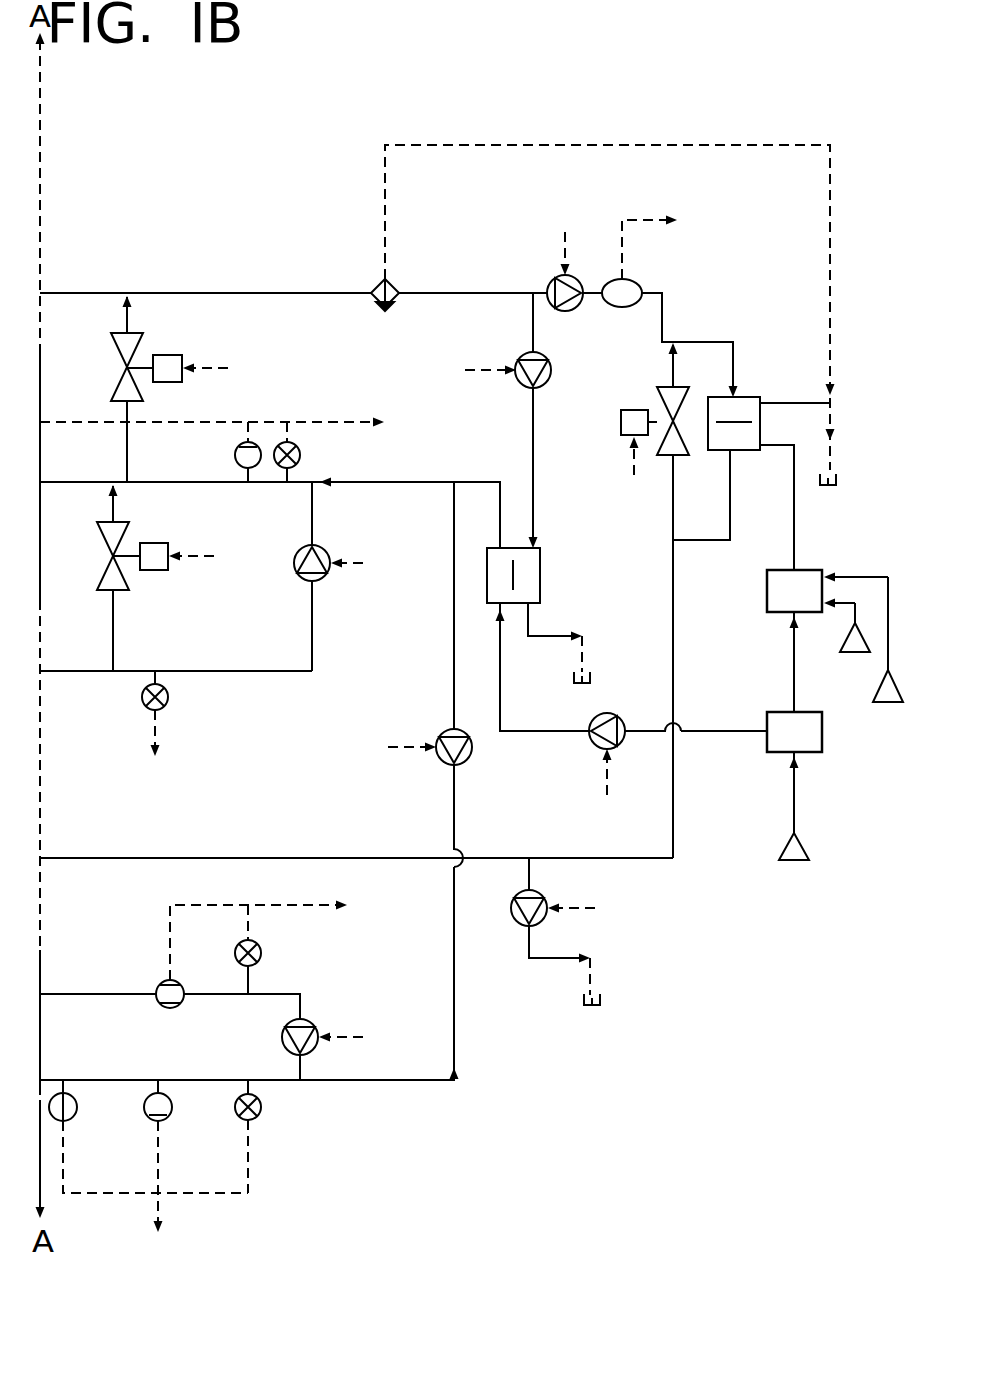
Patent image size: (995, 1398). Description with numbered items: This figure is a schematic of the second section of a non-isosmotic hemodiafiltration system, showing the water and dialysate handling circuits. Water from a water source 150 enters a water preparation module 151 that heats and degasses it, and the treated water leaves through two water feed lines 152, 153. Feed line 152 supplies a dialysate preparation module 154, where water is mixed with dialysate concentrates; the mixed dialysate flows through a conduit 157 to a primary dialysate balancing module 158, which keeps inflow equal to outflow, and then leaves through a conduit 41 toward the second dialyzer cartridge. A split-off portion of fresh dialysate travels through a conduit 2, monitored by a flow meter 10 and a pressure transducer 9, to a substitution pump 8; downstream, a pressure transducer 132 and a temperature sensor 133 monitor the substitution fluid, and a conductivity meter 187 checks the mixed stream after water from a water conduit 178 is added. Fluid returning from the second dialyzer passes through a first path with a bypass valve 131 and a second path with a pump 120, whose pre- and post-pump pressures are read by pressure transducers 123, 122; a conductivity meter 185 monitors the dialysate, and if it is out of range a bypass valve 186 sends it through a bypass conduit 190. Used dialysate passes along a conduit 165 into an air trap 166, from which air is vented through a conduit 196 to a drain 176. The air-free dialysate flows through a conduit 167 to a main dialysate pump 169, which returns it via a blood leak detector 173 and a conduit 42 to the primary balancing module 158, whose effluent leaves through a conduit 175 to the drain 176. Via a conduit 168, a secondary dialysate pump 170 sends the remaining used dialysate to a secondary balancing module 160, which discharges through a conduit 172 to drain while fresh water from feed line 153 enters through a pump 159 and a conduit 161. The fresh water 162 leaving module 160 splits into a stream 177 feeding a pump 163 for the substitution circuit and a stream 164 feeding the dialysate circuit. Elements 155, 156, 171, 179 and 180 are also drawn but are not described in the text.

The conduit 2 is at (107, 993).
The substitution pump 8 is at (318, 1030).
The pressure transducer 9 is at (262, 948).
The flow meter 10 is at (165, 1009).
The conduit 41 is at (675, 598).
The conduit 42 is at (700, 342).
The pump 120 is at (322, 582).
The pressure transducer 122 is at (300, 455).
The pressure transducer 123 is at (143, 703).
The bypass valve 131 is at (110, 560).
The pressure transducer 132 is at (256, 1120).
The temperature sensor 133 is at (70, 1121).
The water source 150 is at (790, 860).
The water preparation module 151 is at (794, 732).
The water feed line 152 is at (793, 650).
The water feed line 153 is at (752, 734).
The dialysate preparation module 154 is at (794, 591).
The filter 155 is at (852, 653).
The filter 156 is at (888, 704).
The conduit 157 is at (792, 448).
The primary dialysate balancing module 158 is at (712, 452).
The pump 159 is at (590, 740).
The secondary balancing module 160 is at (541, 575).
The conduit 161 is at (502, 652).
The fresh water 162 is at (468, 481).
The pump 163 is at (448, 766).
The stream 164 is at (408, 483).
The conduit 165 is at (285, 293).
The air trap 166 is at (372, 286).
The conduit 167 is at (456, 292).
The conduit 168 is at (532, 331).
The main dialysate pump 169 is at (550, 284).
The secondary dialysate pump 170 is at (541, 389).
The line 171 is at (534, 498).
The conduit 172 is at (585, 660).
The blood leak detector 173 is at (622, 308).
The conduit 175 is at (765, 398).
The drain 176 is at (828, 488).
The stream 177 is at (452, 648).
The water conduit 178 is at (458, 1042).
The pump 179 is at (525, 926).
The drain line 180 is at (608, 1000).
The conductivity meter 185 is at (235, 455).
The bypass valve 186 is at (125, 370).
The conductivity meter 187 is at (165, 1121).
The bypass conduit 190 is at (126, 432).
The conduit 196 is at (406, 145).